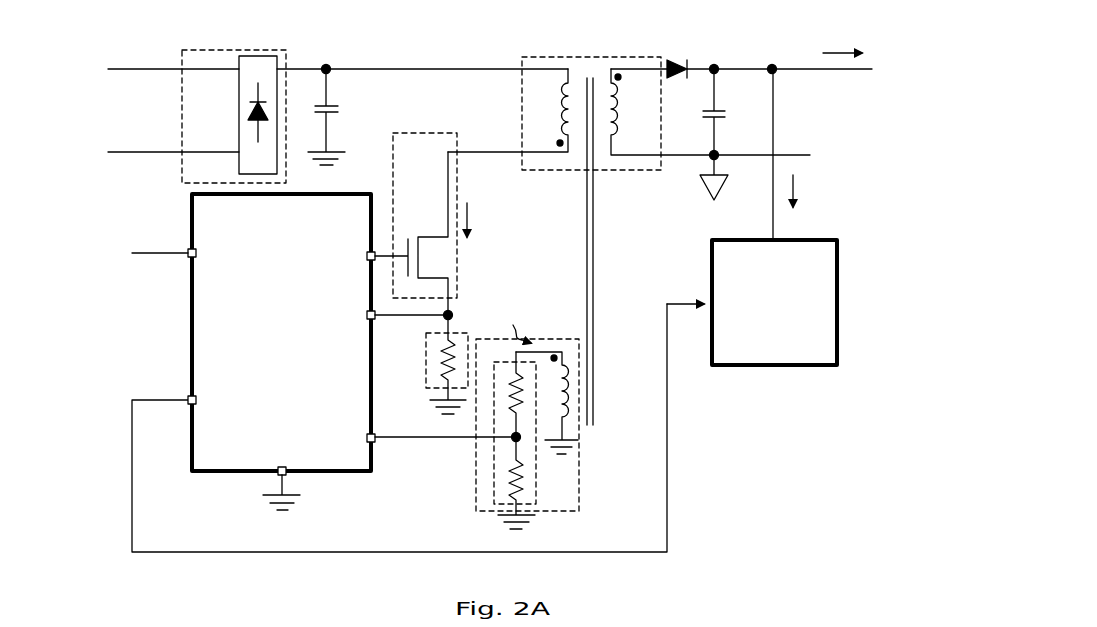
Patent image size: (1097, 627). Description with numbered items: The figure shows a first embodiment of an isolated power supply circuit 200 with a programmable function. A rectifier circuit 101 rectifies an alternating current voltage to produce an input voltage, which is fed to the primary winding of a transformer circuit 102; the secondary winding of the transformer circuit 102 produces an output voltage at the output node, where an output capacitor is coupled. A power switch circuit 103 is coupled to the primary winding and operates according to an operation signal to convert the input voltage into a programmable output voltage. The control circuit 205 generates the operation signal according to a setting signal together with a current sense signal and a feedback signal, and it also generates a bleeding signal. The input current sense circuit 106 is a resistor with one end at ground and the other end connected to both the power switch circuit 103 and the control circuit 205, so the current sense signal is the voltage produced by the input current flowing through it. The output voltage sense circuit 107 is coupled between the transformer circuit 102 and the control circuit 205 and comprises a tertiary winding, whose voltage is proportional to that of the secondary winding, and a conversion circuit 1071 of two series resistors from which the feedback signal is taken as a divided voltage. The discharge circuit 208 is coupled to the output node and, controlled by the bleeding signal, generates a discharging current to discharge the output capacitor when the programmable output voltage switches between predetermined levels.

The isolated power supply circuit 200 is at (893, 30).
The rectifier circuit 101 is at (218, 170).
The transformer circuit 102 is at (602, 55).
The power switch circuit 103 is at (431, 164).
The input current sense circuit 106 is at (425, 355).
The output voltage sense circuit 107 is at (547, 421).
The conversion circuit 1071 is at (536, 487).
The control circuit 205 is at (238, 462).
The discharge circuit 208 is at (756, 358).